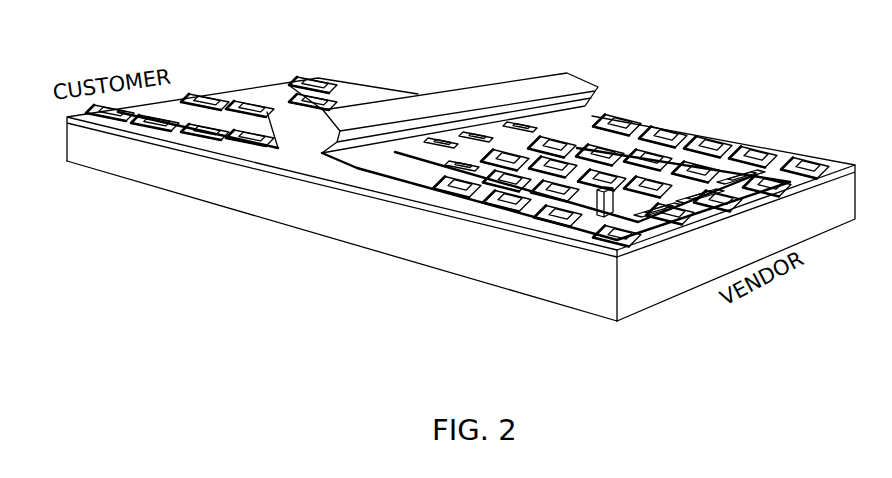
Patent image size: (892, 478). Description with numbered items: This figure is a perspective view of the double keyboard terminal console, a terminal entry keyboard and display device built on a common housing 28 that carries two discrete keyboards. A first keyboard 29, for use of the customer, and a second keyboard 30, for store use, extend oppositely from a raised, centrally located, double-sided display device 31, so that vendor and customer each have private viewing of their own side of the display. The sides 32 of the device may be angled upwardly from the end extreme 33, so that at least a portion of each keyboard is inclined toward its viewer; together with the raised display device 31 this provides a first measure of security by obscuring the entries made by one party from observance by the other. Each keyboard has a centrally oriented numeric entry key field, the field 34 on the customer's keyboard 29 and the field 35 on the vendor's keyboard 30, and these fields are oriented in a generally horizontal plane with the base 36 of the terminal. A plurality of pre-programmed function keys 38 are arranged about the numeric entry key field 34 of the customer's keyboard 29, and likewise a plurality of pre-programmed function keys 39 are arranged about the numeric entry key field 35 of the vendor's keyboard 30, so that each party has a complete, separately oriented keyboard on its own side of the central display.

The common housing 28 is at (333, 220).
The first keyboard 29 is at (211, 85).
The second keyboard 30 is at (575, 161).
The double-sided display device 31 is at (553, 73).
The sides 32 is at (510, 268).
The end extreme 33 is at (682, 283).
The numeric entry key field 34 is at (262, 108).
The numeric entry key field 35 is at (570, 162).
The base 36 is at (398, 258).
The pre-programmed function keys 38 is at (207, 100).
The pre-programmed function keys 39 is at (757, 158).